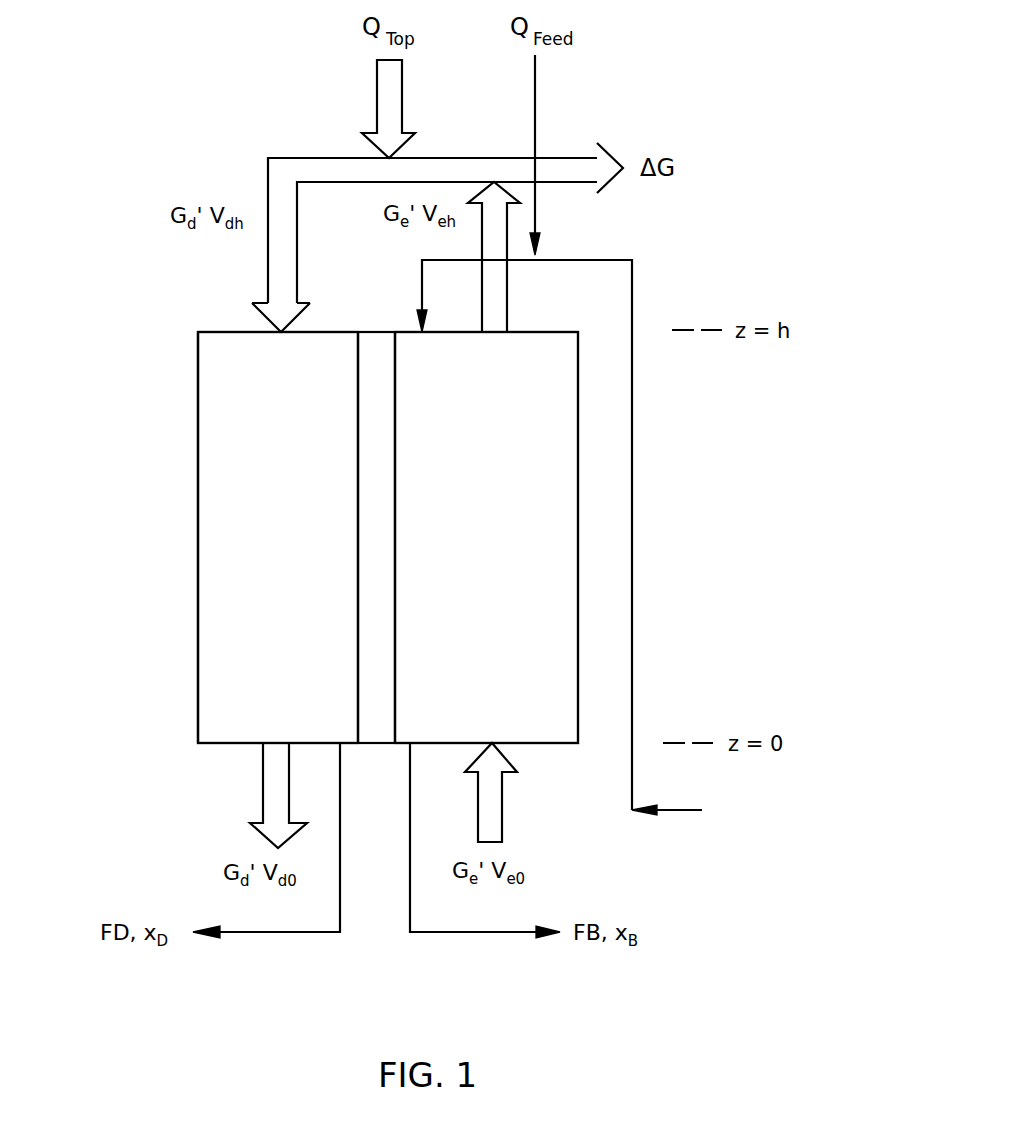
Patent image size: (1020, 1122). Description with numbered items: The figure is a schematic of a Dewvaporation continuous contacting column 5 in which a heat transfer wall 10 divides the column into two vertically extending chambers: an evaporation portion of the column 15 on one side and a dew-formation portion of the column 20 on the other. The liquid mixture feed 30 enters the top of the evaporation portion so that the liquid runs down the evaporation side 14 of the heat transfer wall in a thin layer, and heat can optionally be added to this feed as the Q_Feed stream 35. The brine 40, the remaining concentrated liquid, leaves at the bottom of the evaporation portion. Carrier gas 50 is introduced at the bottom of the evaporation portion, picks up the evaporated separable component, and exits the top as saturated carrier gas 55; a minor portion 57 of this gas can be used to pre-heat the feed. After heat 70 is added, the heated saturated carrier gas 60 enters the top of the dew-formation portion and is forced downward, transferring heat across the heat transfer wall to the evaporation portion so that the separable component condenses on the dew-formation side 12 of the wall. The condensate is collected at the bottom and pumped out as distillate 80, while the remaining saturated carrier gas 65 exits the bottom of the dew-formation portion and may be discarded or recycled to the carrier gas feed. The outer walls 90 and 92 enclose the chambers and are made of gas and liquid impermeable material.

The continuous contacting column 5 is at (150, 419).
The heat transfer wall 10 is at (396, 624).
The dew-formation side of the heat transfer wall 12 is at (340, 416).
The evaporation side of the heat transfer wall 14 is at (412, 415).
The evaporation portion of the column 15 is at (509, 558).
The dew-formation portion of the column 20 is at (298, 558).
The liquid mixture feed 30 is at (675, 813).
The Q_Feed heat stream 35 is at (537, 100).
The brine 40 is at (462, 933).
The carrier gas 50 is at (503, 790).
The saturated carrier gas 55 is at (507, 297).
The minor portion of the saturated carrier gas 57 is at (570, 183).
The heated saturated carrier gas 60 is at (297, 257).
The remaining saturated carrier gas 65 is at (262, 775).
The added heat 70 is at (375, 102).
The distillate 80 is at (280, 934).
The outer wall 90 is at (580, 502).
The outer wall 92 is at (198, 593).